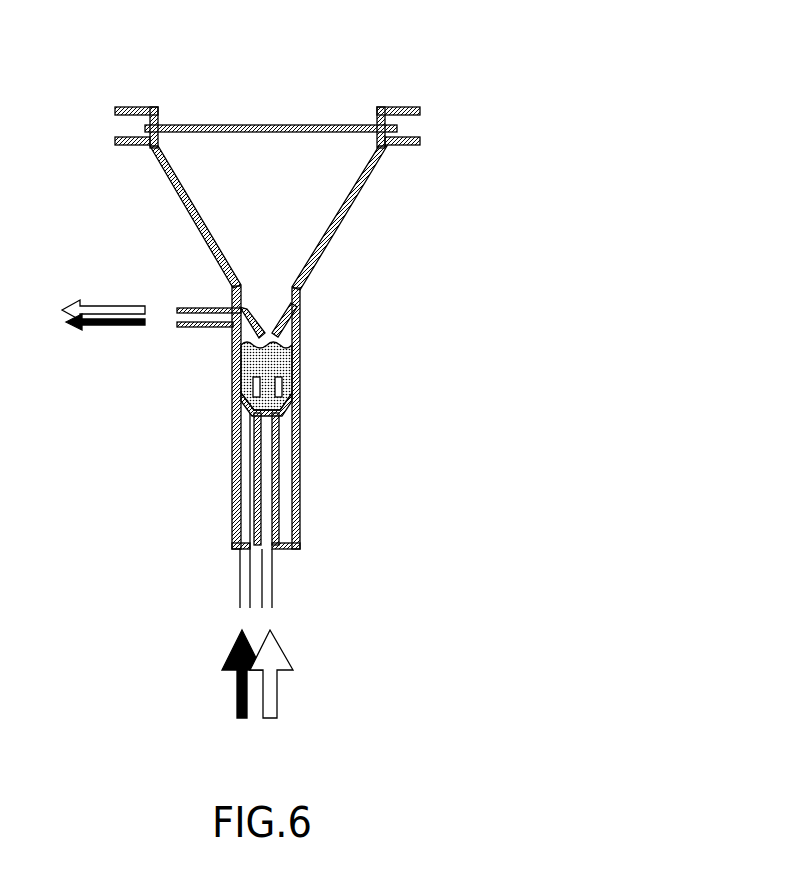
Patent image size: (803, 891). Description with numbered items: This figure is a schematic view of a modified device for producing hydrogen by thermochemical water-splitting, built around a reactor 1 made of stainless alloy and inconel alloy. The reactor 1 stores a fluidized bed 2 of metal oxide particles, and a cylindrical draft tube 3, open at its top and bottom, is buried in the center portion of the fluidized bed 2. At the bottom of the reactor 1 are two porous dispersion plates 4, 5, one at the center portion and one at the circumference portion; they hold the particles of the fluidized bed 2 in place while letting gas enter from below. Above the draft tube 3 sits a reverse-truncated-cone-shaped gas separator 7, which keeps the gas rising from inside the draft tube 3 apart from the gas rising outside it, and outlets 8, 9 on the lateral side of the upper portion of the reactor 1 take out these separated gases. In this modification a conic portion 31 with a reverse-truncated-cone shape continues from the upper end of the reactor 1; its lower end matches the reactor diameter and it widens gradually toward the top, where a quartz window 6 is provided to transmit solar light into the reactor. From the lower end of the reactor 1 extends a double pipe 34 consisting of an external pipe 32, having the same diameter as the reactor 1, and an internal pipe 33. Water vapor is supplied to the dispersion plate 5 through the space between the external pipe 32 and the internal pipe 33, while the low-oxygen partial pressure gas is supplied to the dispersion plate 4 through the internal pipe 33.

The reactor 1 is at (281, 367).
The fluidized bed 2 is at (247, 367).
The draft tube 3 is at (283, 384).
The dispersion plate 4 is at (258, 430).
The dispersion plate 5 is at (252, 406).
The quartz window 6 is at (356, 126).
The gas separator 7 is at (295, 312).
The outlet 8 is at (210, 305).
The outlet 9 is at (218, 322).
The conic portion 31 is at (347, 208).
The external pipe 32 is at (300, 505).
The internal pipe 33 is at (280, 450).
The double pipe 34 is at (326, 533).